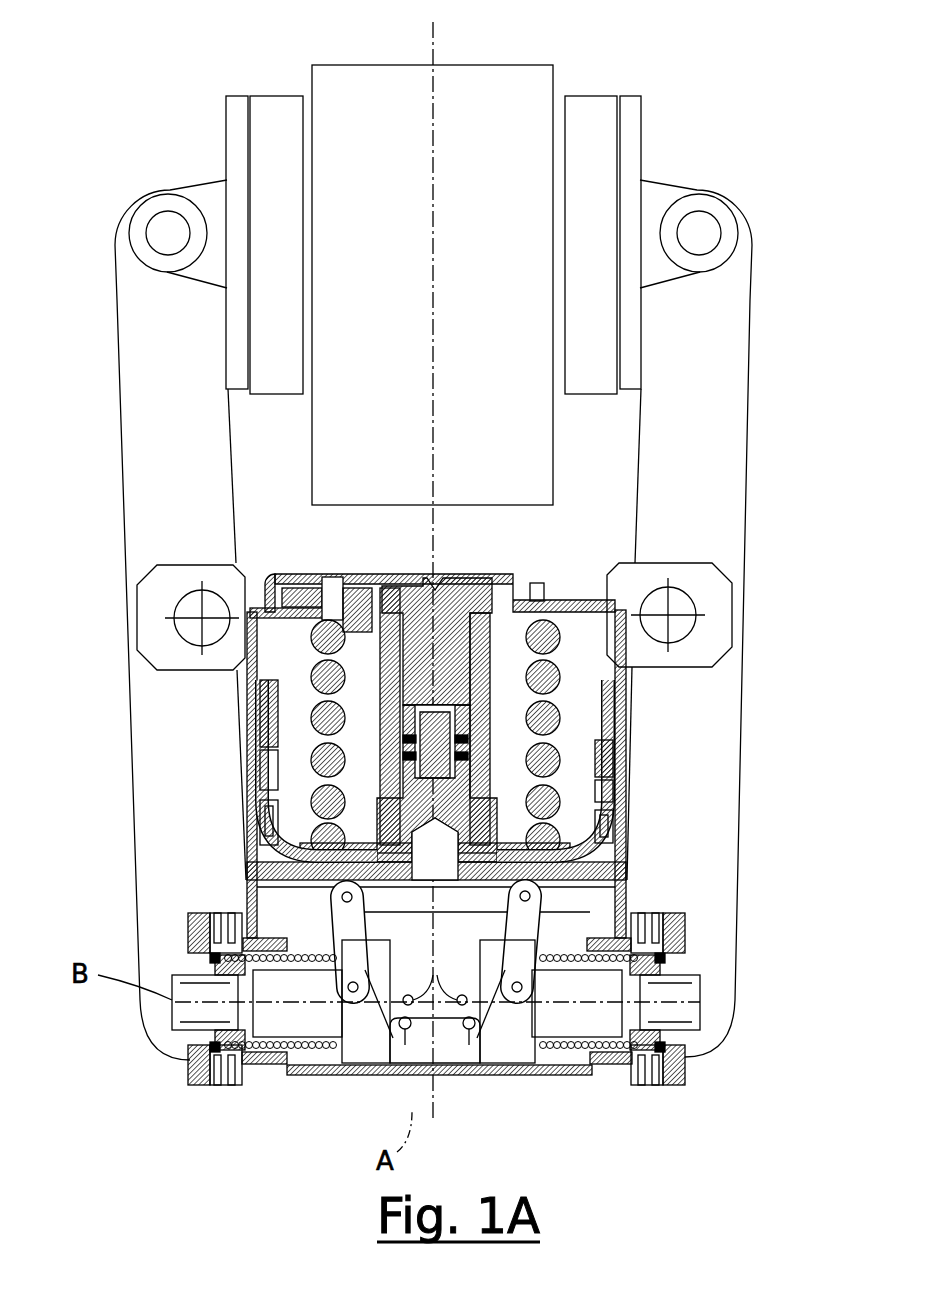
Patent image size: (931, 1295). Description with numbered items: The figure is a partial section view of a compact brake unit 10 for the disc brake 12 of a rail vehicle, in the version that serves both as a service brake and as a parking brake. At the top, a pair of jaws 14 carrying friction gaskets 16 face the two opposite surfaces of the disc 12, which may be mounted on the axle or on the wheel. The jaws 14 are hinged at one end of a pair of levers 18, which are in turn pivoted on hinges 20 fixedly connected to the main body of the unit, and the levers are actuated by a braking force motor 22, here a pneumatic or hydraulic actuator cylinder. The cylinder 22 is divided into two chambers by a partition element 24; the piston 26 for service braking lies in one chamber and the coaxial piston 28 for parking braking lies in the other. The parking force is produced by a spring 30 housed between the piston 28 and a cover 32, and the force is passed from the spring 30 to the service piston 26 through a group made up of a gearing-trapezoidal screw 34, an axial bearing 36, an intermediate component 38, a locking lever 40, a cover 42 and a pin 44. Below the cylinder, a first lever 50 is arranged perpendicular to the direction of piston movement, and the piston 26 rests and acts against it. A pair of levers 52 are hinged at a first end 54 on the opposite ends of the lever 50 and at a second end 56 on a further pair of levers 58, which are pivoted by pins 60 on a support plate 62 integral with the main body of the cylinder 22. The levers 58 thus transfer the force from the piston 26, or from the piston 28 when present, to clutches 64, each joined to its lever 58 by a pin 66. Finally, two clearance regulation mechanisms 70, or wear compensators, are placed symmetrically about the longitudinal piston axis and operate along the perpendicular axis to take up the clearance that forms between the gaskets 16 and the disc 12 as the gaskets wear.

The compact brake unit 10 is at (778, 333).
The disc brake 12 is at (418, 105).
The jaws 14 is at (236, 108).
The friction gaskets 16 is at (282, 118).
The levers 18 is at (668, 476).
The hinges 20 is at (180, 582).
The braking force motor 22 is at (641, 688).
The partition element 24 is at (613, 790).
The piston for service braking 26 is at (600, 835).
The piston for parking braking 28 is at (615, 748).
The spring 30 is at (543, 742).
The cover 32 is at (572, 603).
The gearing-trapezoidal screw 34 is at (388, 592).
The axial bearing 36 is at (410, 745).
The intermediate component 38 is at (404, 722).
The locking lever 40 is at (290, 588).
The cover 42 is at (500, 590).
The pin 44 is at (338, 592).
The first lever 50 is at (440, 898).
The levers 52 is at (347, 930).
The first end 54 is at (343, 895).
The second end 56 is at (348, 987).
The levers 58 is at (382, 1012).
The pins 60 is at (435, 1043).
The support plate 62 is at (450, 1063).
The clutches 64 is at (362, 1043).
The pin 66 is at (408, 995).
The clearance regulation mechanisms 70 is at (280, 1068).